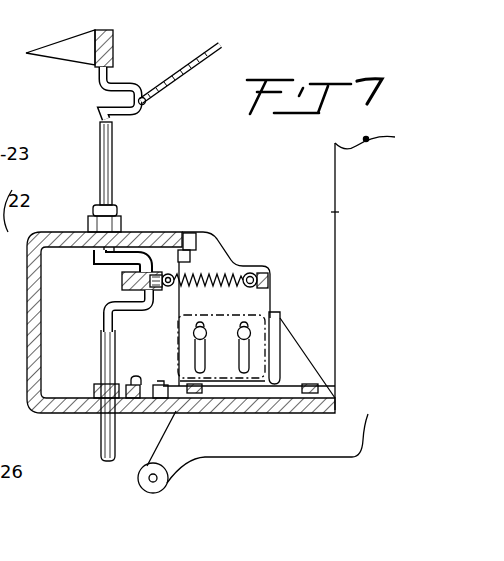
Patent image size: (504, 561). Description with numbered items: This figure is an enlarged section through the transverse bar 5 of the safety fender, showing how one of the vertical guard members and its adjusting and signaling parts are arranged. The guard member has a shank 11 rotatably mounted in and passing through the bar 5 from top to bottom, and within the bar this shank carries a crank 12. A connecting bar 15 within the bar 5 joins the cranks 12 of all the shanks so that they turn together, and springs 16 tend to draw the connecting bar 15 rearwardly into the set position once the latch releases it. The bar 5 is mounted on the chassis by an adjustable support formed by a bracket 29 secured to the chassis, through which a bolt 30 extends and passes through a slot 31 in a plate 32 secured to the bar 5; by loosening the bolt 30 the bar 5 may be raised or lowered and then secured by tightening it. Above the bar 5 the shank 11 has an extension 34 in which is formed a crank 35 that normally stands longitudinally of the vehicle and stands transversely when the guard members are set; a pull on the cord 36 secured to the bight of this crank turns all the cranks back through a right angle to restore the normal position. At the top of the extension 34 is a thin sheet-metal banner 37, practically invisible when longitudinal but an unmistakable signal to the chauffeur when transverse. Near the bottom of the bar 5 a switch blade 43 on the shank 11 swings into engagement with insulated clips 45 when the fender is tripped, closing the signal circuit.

The bar 5 is at (56, 413).
The shank 11 is at (99, 441).
The crank 12 is at (144, 311).
The connecting bar 15 is at (122, 282).
The spring 16 is at (222, 273).
The bracket 29 is at (293, 358).
The bolt 30 is at (249, 329).
The slot 31 is at (203, 355).
The plate 32 is at (208, 253).
The extension 34 is at (112, 178).
The crank 35 is at (140, 116).
The cord 36 is at (182, 77).
The metal banner 37 is at (77, 56).
The switch blade 43 is at (117, 385).
The clip 45 is at (141, 401).